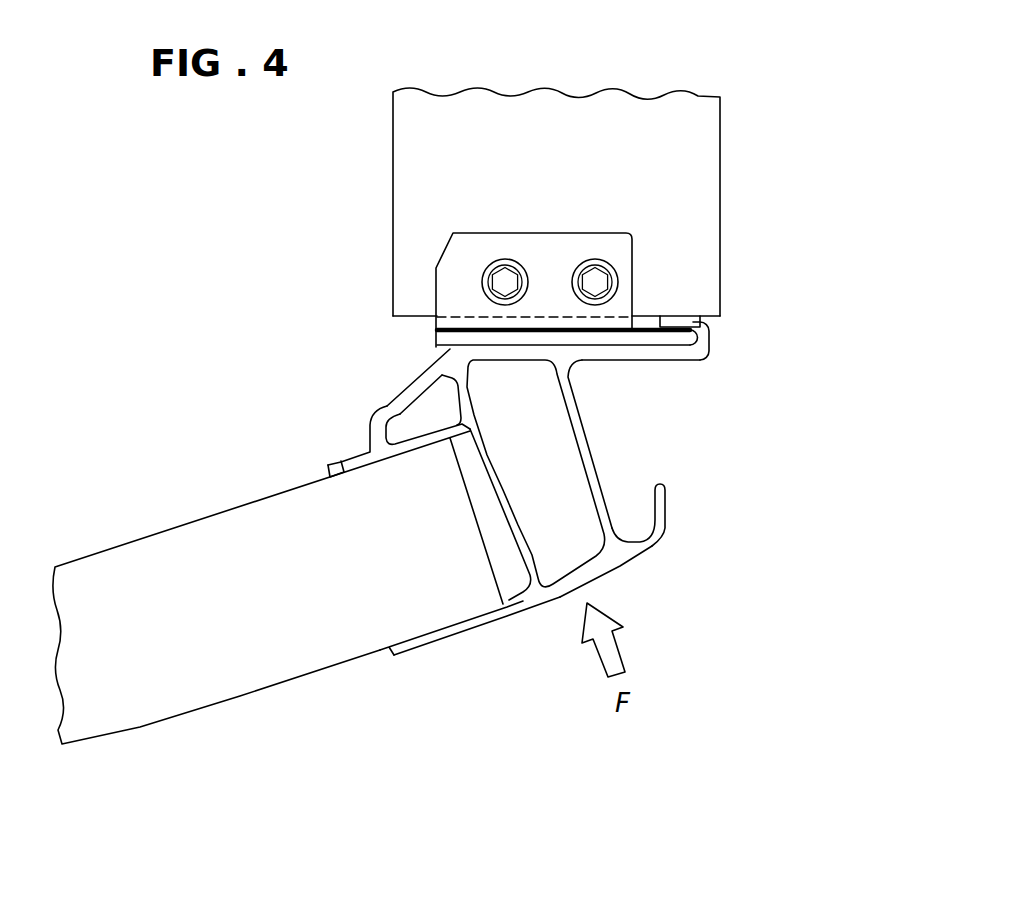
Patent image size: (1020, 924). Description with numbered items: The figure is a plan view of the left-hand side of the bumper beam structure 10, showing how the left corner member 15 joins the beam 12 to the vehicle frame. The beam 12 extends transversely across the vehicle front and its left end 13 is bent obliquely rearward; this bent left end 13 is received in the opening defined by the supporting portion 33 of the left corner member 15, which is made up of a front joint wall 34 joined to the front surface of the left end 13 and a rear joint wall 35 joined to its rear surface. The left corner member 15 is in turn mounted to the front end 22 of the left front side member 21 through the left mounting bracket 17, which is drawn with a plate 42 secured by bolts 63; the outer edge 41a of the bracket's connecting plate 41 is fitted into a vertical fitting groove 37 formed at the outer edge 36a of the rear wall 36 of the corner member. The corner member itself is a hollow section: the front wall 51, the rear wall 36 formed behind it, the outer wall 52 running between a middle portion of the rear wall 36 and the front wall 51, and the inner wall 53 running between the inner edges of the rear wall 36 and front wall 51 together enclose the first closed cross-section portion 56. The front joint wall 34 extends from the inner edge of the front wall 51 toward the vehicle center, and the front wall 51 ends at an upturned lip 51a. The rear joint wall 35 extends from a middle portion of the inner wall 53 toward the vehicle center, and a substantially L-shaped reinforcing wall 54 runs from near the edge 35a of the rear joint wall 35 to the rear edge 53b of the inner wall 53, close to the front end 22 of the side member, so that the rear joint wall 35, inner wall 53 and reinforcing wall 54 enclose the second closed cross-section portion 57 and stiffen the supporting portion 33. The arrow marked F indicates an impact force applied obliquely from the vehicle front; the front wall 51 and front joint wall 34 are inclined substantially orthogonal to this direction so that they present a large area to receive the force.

The bumper beam structure 10 is at (103, 288).
The beam 12 is at (102, 747).
The left end 13 is at (318, 668).
The left corner member 15 is at (703, 537).
The left mounting bracket 17 is at (433, 242).
The left front side member 21 is at (722, 112).
The front end 22 is at (722, 300).
The supporting portion 33 is at (423, 661).
The front joint wall 34 is at (478, 626).
The rear joint wall 35 is at (382, 405).
The edge 35a is at (330, 462).
The rear wall 36 is at (548, 357).
The outer edge 36a is at (710, 348).
The fitting groove 37 is at (670, 327).
The connecting plate 41 is at (475, 337).
The outer edge 41a is at (680, 330).
The plate 42 is at (610, 235).
The front wall 51 is at (607, 575).
The upturned lip 51a is at (668, 503).
The outer wall 52 is at (598, 480).
The inner wall 53 is at (512, 508).
The rear edge 53b is at (452, 352).
The reinforcing wall 54 is at (398, 405).
The first closed cross-section portion 56 is at (564, 436).
The second closed cross-section portion 57 is at (390, 393).
The bolt 63 is at (501, 266).